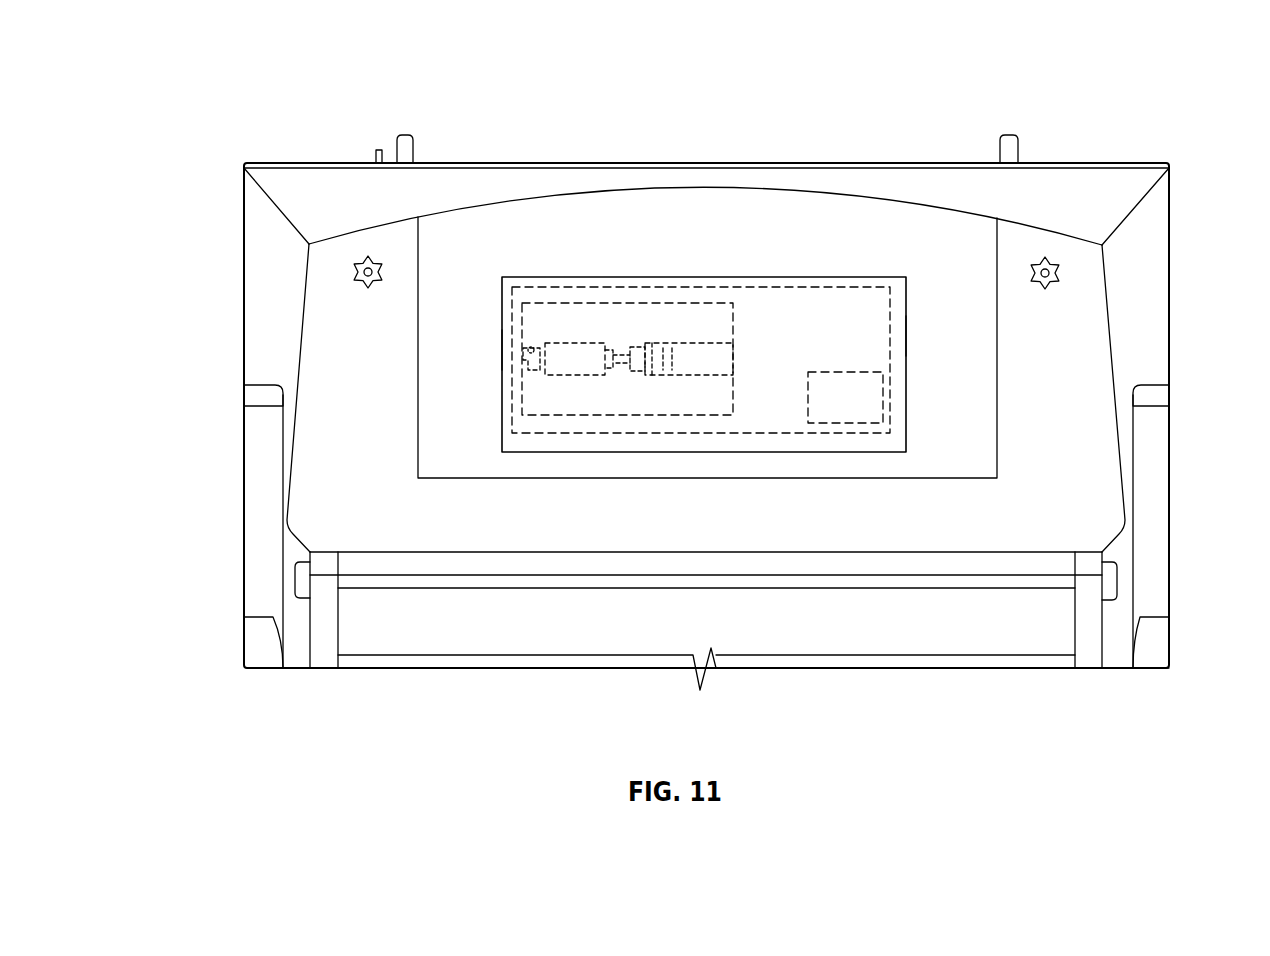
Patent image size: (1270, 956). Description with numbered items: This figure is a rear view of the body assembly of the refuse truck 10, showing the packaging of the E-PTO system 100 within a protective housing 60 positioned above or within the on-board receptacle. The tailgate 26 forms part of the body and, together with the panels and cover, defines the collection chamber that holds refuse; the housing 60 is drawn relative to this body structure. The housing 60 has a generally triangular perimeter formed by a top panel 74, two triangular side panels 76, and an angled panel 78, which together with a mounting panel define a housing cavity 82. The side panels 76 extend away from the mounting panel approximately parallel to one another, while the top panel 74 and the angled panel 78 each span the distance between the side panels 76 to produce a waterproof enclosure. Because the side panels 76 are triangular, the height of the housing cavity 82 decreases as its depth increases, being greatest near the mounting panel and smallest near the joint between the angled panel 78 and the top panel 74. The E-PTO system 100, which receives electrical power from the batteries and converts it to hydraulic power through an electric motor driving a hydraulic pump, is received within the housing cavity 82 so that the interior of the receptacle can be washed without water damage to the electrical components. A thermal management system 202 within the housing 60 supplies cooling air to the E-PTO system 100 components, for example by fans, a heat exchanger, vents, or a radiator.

The refuse truck 10 is at (223, 102).
The tailgate 26 is at (1150, 515).
The top panel 74 is at (741, 277).
The side panels 76 is at (502, 350).
The housing 60 is at (734, 354).
The housing cavity 82 is at (597, 402).
The E-PTO system 100 is at (580, 330).
The angled panel 78 is at (633, 347).
The thermal management system 202 is at (850, 413).